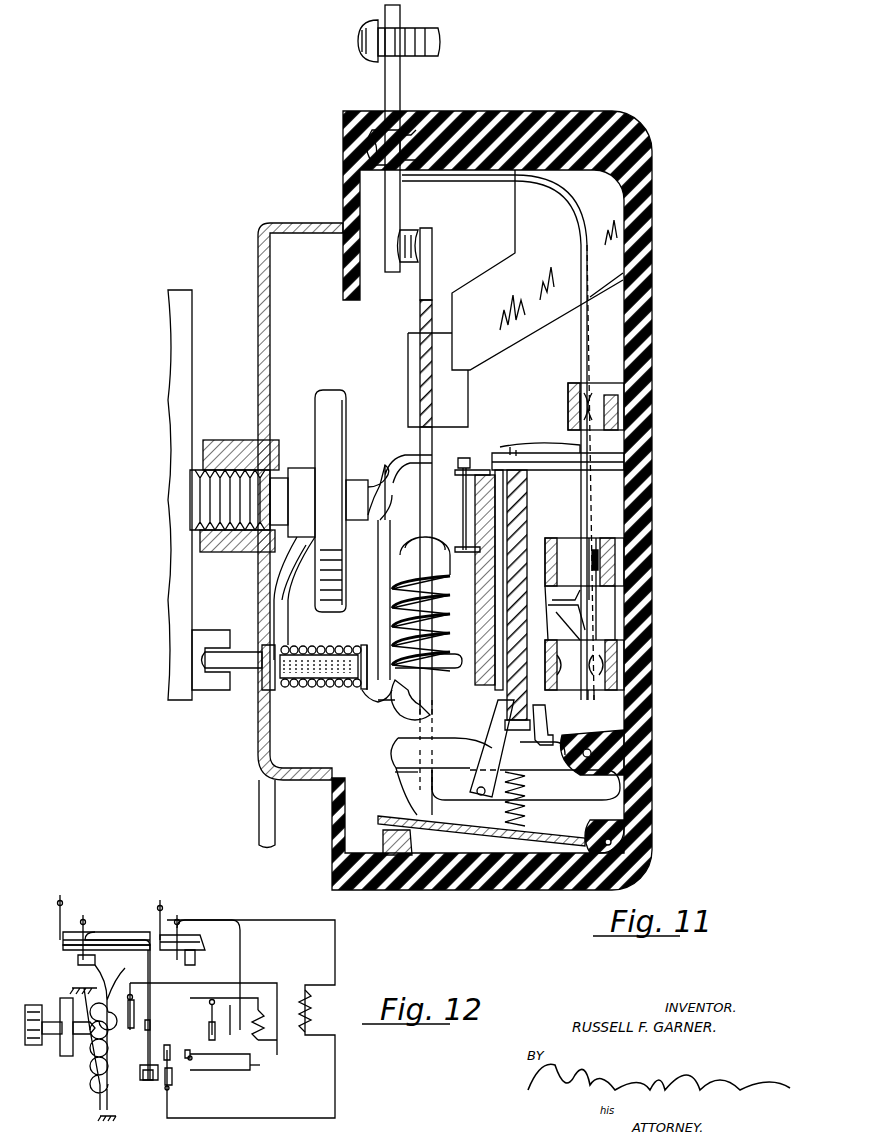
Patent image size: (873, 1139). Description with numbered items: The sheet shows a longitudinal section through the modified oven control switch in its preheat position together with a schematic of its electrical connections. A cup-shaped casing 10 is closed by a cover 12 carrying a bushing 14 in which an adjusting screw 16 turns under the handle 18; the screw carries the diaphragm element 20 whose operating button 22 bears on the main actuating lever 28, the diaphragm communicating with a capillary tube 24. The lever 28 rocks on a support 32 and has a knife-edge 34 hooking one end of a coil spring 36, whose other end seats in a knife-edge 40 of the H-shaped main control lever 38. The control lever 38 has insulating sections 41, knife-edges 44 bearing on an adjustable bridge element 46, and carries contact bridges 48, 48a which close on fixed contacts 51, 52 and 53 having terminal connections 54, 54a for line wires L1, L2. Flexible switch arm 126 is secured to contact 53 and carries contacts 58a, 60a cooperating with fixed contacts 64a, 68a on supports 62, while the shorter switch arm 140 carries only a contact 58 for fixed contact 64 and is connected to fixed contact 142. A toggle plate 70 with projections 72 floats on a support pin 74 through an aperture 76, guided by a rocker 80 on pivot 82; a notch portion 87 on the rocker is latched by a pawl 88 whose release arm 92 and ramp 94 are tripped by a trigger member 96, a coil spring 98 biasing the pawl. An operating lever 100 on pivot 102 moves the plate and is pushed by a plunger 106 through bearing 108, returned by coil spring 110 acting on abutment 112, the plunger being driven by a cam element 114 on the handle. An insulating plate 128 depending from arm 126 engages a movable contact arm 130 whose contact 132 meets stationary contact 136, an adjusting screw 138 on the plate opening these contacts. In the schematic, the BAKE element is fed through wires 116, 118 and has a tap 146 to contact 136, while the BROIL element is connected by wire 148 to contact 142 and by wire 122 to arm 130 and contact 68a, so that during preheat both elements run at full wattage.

In FIG. 11, the casing 10 is at (652, 186).
In FIG. 11, the cover 12 is at (300, 501).
In FIG. 11, the bushing 14 is at (228, 445).
In FIG. 11, the adjusting screw 16 is at (230, 552).
In FIG. 11, the handle 18 is at (188, 292).
In FIG. 11, the diaphragm element 20 is at (345, 396).
In FIG. 12, the diaphragm element 20 is at (62, 1056).
In FIG. 11, the operating button 22 is at (368, 487).
In FIG. 11, the capillary tube 24 is at (259, 805).
In FIG. 11, the main actuating lever 28 is at (378, 625).
In FIG. 12, the main actuating lever 28 is at (72, 990).
In FIG. 11, the support 32 is at (408, 355).
In FIG. 11, the knife-edge 34 is at (400, 712).
In FIG. 11, the coil spring 36 is at (416, 560).
In FIG. 12, the coil spring 36 is at (98, 1086).
In FIG. 11, the main control lever 38 is at (415, 446).
In FIG. 12, the main control lever 38 is at (105, 978).
In FIG. 11, the knife-edge 40 is at (410, 550).
In FIG. 11, the insulating section 41 is at (420, 322).
In FIG. 11, the knife-edge 44 is at (396, 776).
In FIG. 11, the adjustable bridge element 46 is at (398, 815).
In FIG. 12, the contact bridge 48 is at (196, 955).
In FIG. 11, the contact bridge 48a is at (420, 292).
In FIG. 12, the contact bridge 48a is at (72, 947).
In FIG. 12, the fixed contact 51 is at (179, 920).
In FIG. 11, the fixed contact 52 is at (416, 240).
In FIG. 12, the fixed contact 52 is at (63, 932).
In FIG. 12, the fixed contact 53 is at (86, 925).
In FIG. 12, the terminal connection 54 is at (158, 908).
In FIG. 11, the terminal connection 54a is at (385, 58).
In FIG. 12, the terminal connection 54a is at (58, 904).
In FIG. 12, the contact 58 is at (210, 1008).
In FIG. 11, the contact 58a is at (578, 392).
In FIG. 12, the contact 58a is at (150, 1024).
In FIG. 11, the contact 60a is at (595, 538).
In FIG. 12, the contact 60a is at (158, 1080).
In FIG. 11, the support 62 is at (624, 392).
In FIG. 12, the fixed contact 64 is at (228, 1025).
In FIG. 11, the fixed contact 64a is at (584, 408).
In FIG. 12, the fixed contact 64a is at (133, 995).
In FIG. 11, the fixed contact 68a is at (600, 562).
In FIG. 12, the fixed contact 68a is at (170, 1088).
In FIG. 11, the toggle plate 70 is at (512, 452).
In FIG. 11, the projection 72 is at (548, 478).
In FIG. 11, the support pin 74 is at (652, 450).
In FIG. 11, the aperture 76 is at (545, 438).
In FIG. 11, the rocker 80 is at (500, 716).
In FIG. 11, the pivot 82 is at (478, 794).
In FIG. 11, the notch portion 87 is at (546, 722).
In FIG. 11, the pawl 88 is at (560, 765).
In FIG. 11, the release arm 92 is at (455, 765).
In FIG. 11, the ramp 94 is at (396, 744).
In FIG. 11, the trigger member 96 is at (420, 736).
In FIG. 11, the coil spring 98 is at (525, 810).
In FIG. 11, the operating lever 100 is at (482, 605).
In FIG. 11, the pivot 102 is at (462, 462).
In FIG. 11, the plunger 106 is at (252, 668).
In FIG. 11, the bearing 108 is at (374, 680).
In FIG. 11, the coil spring 110 is at (332, 648).
In FIG. 11, the abutment 112 is at (290, 685).
In FIG. 11, the cam element 114 is at (205, 688).
In FIG. 12, the wire 116 is at (203, 1017).
In FIG. 12, the wire 118 is at (281, 1024).
In FIG. 12, the wire 122 is at (240, 1118).
In FIG. 11, the flexible switch arm 126 is at (630, 318).
In FIG. 12, the flexible switch arm 126 is at (126, 940).
In FIG. 11, the insulating plate 128 is at (600, 615).
In FIG. 11, the movable contact arm 130 is at (565, 613).
In FIG. 12, the movable contact arm 130 is at (148, 1062).
In FIG. 11, the contact 132 is at (590, 660).
In FIG. 12, the contact 132 is at (167, 1057).
In FIG. 11, the stationary contact 136 is at (562, 685).
In FIG. 12, the stationary contact 136 is at (192, 1053).
In FIG. 11, the adjusting screw 138 is at (567, 622).
In FIG. 12, the flexible switch arm 140 is at (232, 937).
In FIG. 12, the fixed contact 142 is at (180, 930).
In FIG. 12, the tap 146 is at (255, 1066).
In FIG. 12, the wire 148 is at (305, 920).
In FIG. 12, the line wire L1 is at (172, 885).
In FIG. 12, the line wire L2 is at (72, 885).
In FIG. 12, the bake element BAKE is at (260, 995).
In FIG. 12, the broil element BROIL is at (305, 990).